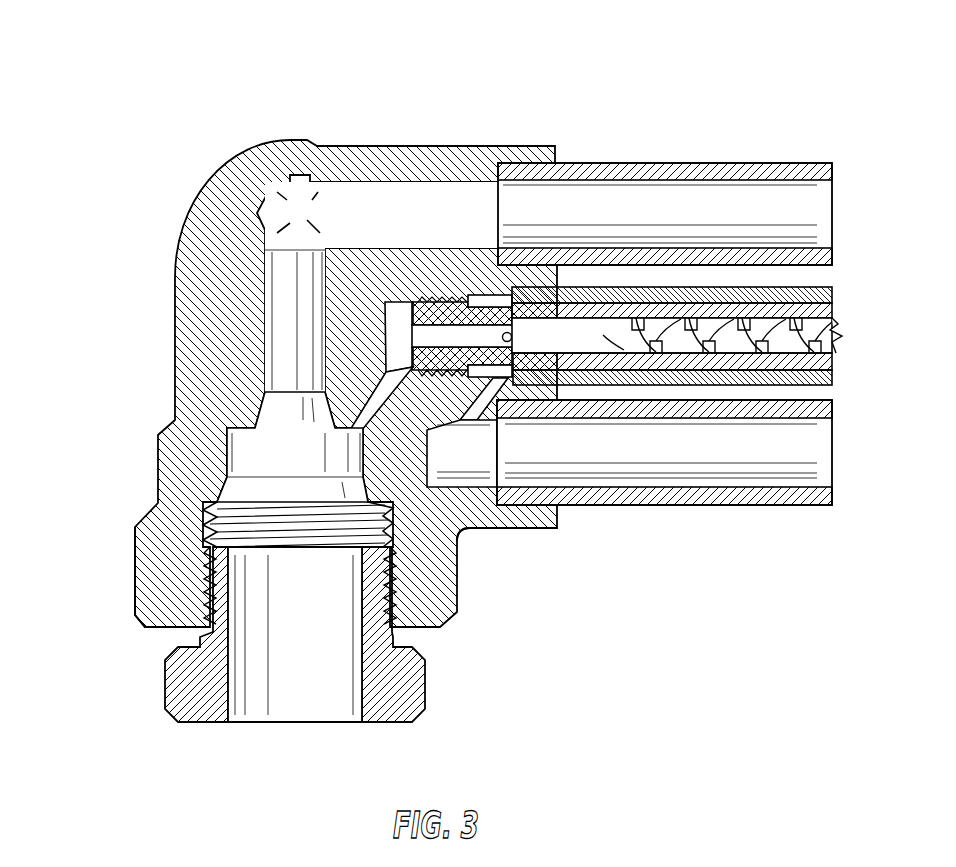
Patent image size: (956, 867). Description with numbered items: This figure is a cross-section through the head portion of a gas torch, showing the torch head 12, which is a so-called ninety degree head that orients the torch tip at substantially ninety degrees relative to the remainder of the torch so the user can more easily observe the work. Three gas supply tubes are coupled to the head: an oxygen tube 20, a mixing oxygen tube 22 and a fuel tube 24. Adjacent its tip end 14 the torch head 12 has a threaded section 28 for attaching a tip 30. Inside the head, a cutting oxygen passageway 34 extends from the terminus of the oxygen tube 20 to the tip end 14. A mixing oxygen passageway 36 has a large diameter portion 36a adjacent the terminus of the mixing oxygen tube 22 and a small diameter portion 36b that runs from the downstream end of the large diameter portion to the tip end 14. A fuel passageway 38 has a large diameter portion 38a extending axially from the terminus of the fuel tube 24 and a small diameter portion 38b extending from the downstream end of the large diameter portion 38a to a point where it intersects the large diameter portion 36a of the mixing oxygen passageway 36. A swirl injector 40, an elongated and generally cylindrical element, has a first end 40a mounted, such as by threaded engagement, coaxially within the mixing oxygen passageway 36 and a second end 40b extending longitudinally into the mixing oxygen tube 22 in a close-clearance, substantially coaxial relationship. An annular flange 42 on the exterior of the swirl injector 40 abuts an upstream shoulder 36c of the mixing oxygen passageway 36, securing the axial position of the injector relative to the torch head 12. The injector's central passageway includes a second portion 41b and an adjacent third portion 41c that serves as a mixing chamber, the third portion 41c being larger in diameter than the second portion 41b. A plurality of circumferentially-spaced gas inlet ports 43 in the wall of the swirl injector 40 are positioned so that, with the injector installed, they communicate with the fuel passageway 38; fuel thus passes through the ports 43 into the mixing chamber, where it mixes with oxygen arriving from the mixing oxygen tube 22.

The torch head 12 is at (227, 175).
The tip end 14 is at (153, 625).
The oxygen tube 20 is at (650, 190).
The mixing oxygen tube 22 is at (710, 467).
The fuel tube 24 is at (751, 413).
The threaded section 28 is at (400, 590).
The tip 30 is at (200, 722).
The cutting oxygen passageway 34 is at (377, 190).
The mixing oxygen passageway 36 is at (403, 313).
The large diameter portion 36a is at (390, 330).
The small diameter portion 36b is at (363, 382).
The upstream shoulder 36c is at (508, 400).
The fuel passageway 38 is at (453, 458).
The large diameter portion 38a is at (460, 537).
The small diameter portion 38b is at (462, 398).
The swirl injector 40 is at (710, 317).
The first end 40a is at (458, 330).
The second end 40b is at (753, 353).
The second portion 41b is at (565, 337).
The third portion 41c is at (470, 295).
The annular flange 42 is at (507, 330).
The gas inlet ports 43 is at (527, 305).